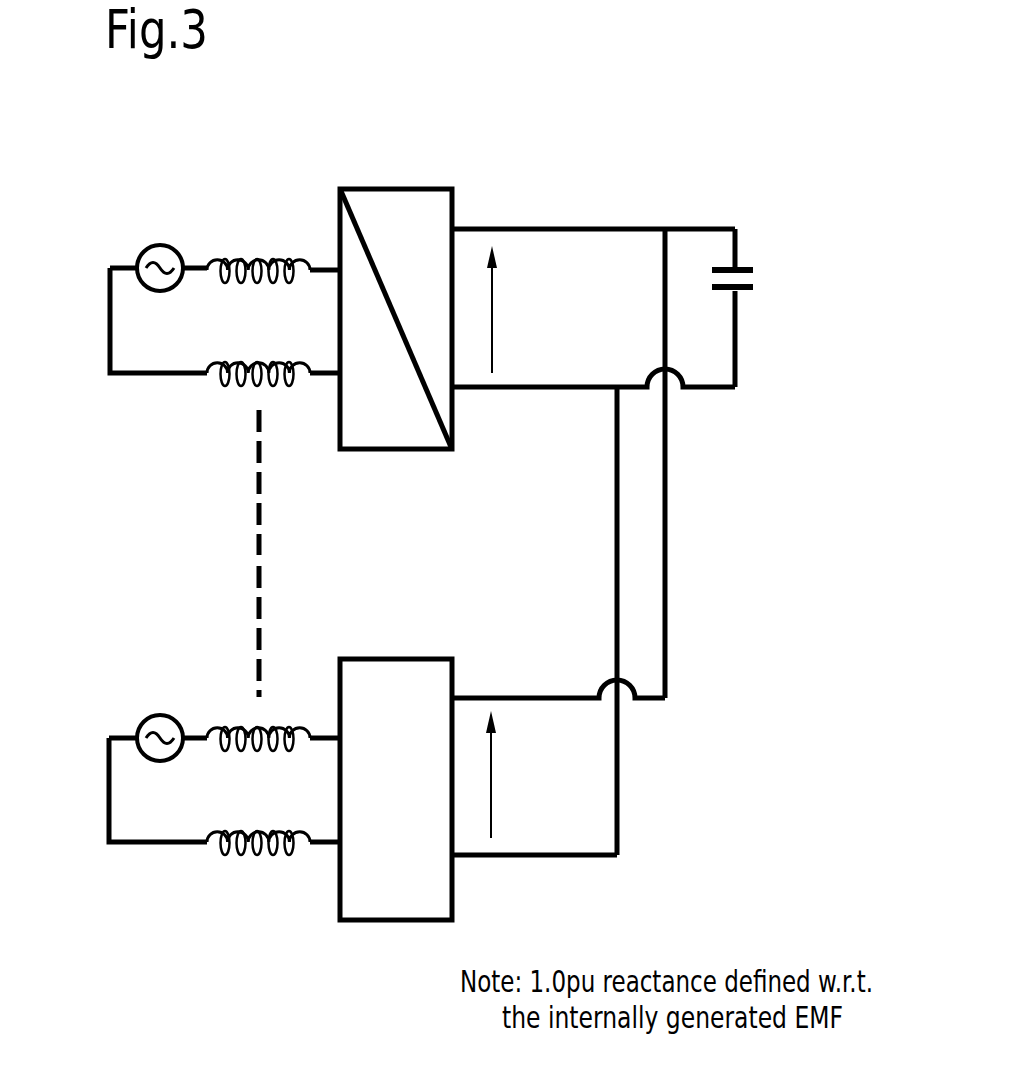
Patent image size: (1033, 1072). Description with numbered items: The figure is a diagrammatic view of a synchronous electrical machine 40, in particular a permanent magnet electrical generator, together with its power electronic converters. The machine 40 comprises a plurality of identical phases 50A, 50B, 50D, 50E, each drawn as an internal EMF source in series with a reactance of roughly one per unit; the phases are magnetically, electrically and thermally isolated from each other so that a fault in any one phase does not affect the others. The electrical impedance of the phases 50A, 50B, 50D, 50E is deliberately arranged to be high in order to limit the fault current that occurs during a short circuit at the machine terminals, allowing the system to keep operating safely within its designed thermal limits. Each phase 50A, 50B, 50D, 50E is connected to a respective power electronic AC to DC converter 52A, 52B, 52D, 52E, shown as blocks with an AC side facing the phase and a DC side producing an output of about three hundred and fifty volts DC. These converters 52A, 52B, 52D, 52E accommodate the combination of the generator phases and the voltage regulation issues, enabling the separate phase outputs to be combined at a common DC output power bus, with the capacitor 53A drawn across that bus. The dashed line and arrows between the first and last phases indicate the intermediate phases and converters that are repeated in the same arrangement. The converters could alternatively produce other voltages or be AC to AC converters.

The synchronous electrical machine 40 is at (98, 288).
The phase 50A is at (325, 263).
The phase 50B is at (134, 603).
The phase 50D is at (186, 631).
The phase 50E is at (327, 838).
The power electronic AC to DC converter 52A is at (455, 200).
The power electronic AC to DC converter 52B is at (525, 600).
The power electronic AC to DC converter 52D is at (582, 621).
The power electronic AC to DC converter 52E is at (453, 882).
The output power bus capacitor 53A is at (710, 228).